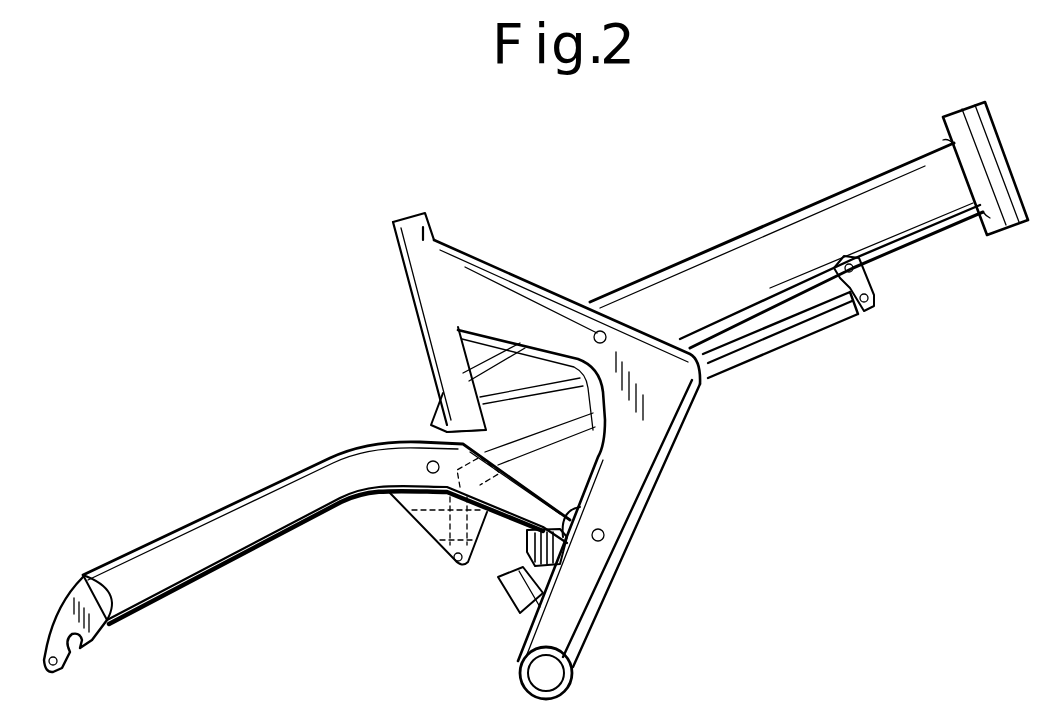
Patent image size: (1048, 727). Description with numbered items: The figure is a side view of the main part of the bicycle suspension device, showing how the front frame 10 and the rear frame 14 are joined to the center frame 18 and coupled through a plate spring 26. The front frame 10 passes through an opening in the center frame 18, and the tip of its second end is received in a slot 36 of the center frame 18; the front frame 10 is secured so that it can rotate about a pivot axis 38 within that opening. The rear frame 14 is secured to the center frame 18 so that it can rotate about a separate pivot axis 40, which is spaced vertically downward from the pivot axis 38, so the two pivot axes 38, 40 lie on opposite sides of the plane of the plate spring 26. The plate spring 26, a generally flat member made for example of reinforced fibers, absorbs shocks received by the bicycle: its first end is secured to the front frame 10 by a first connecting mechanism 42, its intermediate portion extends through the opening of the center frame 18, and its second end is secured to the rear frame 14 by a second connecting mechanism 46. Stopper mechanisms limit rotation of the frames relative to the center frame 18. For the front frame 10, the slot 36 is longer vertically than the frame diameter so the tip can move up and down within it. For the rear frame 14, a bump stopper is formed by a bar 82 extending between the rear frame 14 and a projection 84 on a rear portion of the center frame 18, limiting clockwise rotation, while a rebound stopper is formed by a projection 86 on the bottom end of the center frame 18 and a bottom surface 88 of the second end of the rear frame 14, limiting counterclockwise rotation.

The front frame 10 is at (903, 180).
The rear frame 14 is at (137, 583).
The center frame 18 is at (510, 280).
The plate spring 26 is at (800, 328).
The slot 36 is at (483, 418).
The pivot axis 38 is at (608, 331).
The pivot axis 40 is at (604, 536).
The first connecting mechanism 42 is at (886, 292).
The second connecting mechanism 46 is at (417, 527).
The bar 82 is at (427, 463).
The projection 84 is at (440, 407).
The projection 86 is at (562, 568).
The bottom surface 88 is at (527, 527).